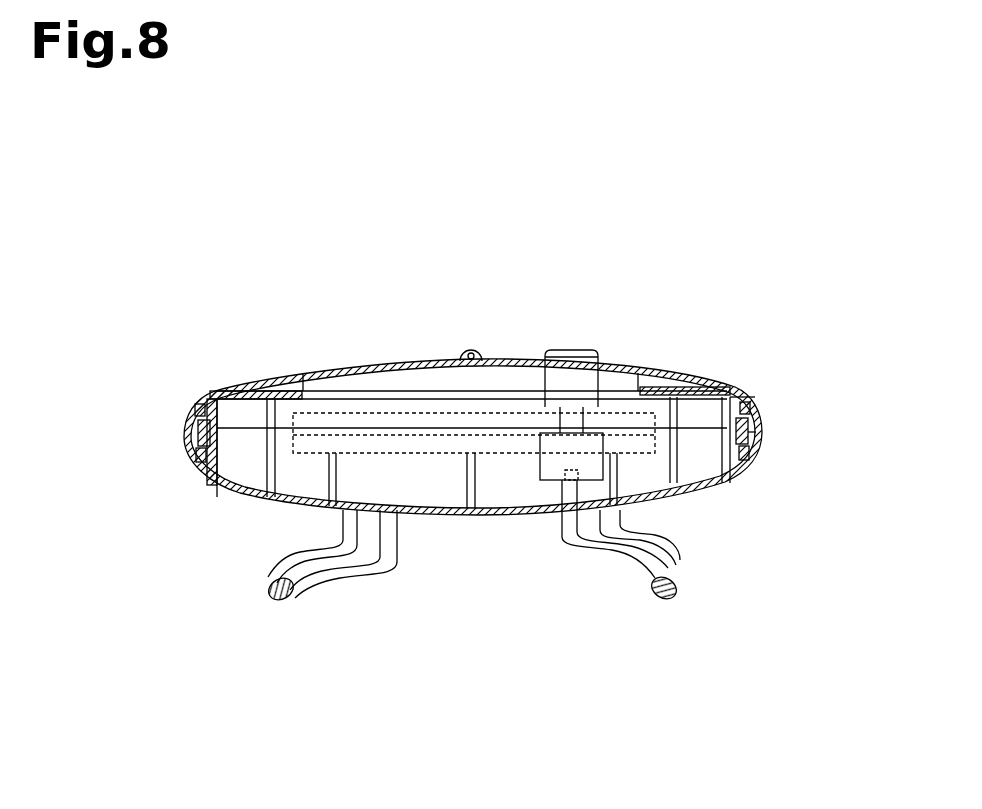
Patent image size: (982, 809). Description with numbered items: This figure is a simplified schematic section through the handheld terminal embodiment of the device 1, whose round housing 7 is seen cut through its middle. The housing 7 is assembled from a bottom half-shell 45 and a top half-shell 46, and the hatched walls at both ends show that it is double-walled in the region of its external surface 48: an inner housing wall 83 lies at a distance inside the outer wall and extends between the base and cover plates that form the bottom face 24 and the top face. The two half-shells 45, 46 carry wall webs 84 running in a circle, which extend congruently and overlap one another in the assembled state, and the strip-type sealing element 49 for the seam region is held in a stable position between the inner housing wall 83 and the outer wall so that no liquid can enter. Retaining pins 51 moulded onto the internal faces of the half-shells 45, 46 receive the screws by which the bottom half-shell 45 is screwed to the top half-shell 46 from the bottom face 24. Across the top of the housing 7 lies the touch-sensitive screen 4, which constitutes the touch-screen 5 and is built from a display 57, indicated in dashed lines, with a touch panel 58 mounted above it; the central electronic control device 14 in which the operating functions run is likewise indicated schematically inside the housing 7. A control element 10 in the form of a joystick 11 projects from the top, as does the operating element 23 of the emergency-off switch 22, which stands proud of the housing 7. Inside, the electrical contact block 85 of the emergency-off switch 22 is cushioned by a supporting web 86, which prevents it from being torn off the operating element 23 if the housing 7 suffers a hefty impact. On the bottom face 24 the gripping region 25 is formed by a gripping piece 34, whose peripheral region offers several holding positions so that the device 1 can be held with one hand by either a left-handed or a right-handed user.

The device 1 is at (689, 225).
The touch-sensitive screen 4 is at (486, 398).
The touch-screen 5 is at (501, 400).
The housing 7 is at (747, 385).
The control element 10 is at (481, 336).
The joystick 11 is at (472, 350).
The central electronic control device 14 is at (420, 452).
The emergency-off switch 22 is at (582, 335).
The operating element 23 is at (590, 352).
The bottom face 24 is at (486, 518).
The gripping region 25 is at (276, 615).
The gripping piece 34 is at (333, 563).
The bottom half-shell 45 is at (250, 505).
The top half-shell 46 is at (232, 388).
The external surface 48 is at (760, 412).
The sealing element 49 is at (762, 422).
The retaining pins 51 is at (272, 398).
The display 57 is at (326, 420).
The touch panel 58 is at (363, 400).
The inner housing wall 83 is at (188, 477).
The wall webs 84 is at (203, 398).
The contact block 85 is at (550, 480).
The supporting web 86 is at (568, 500).